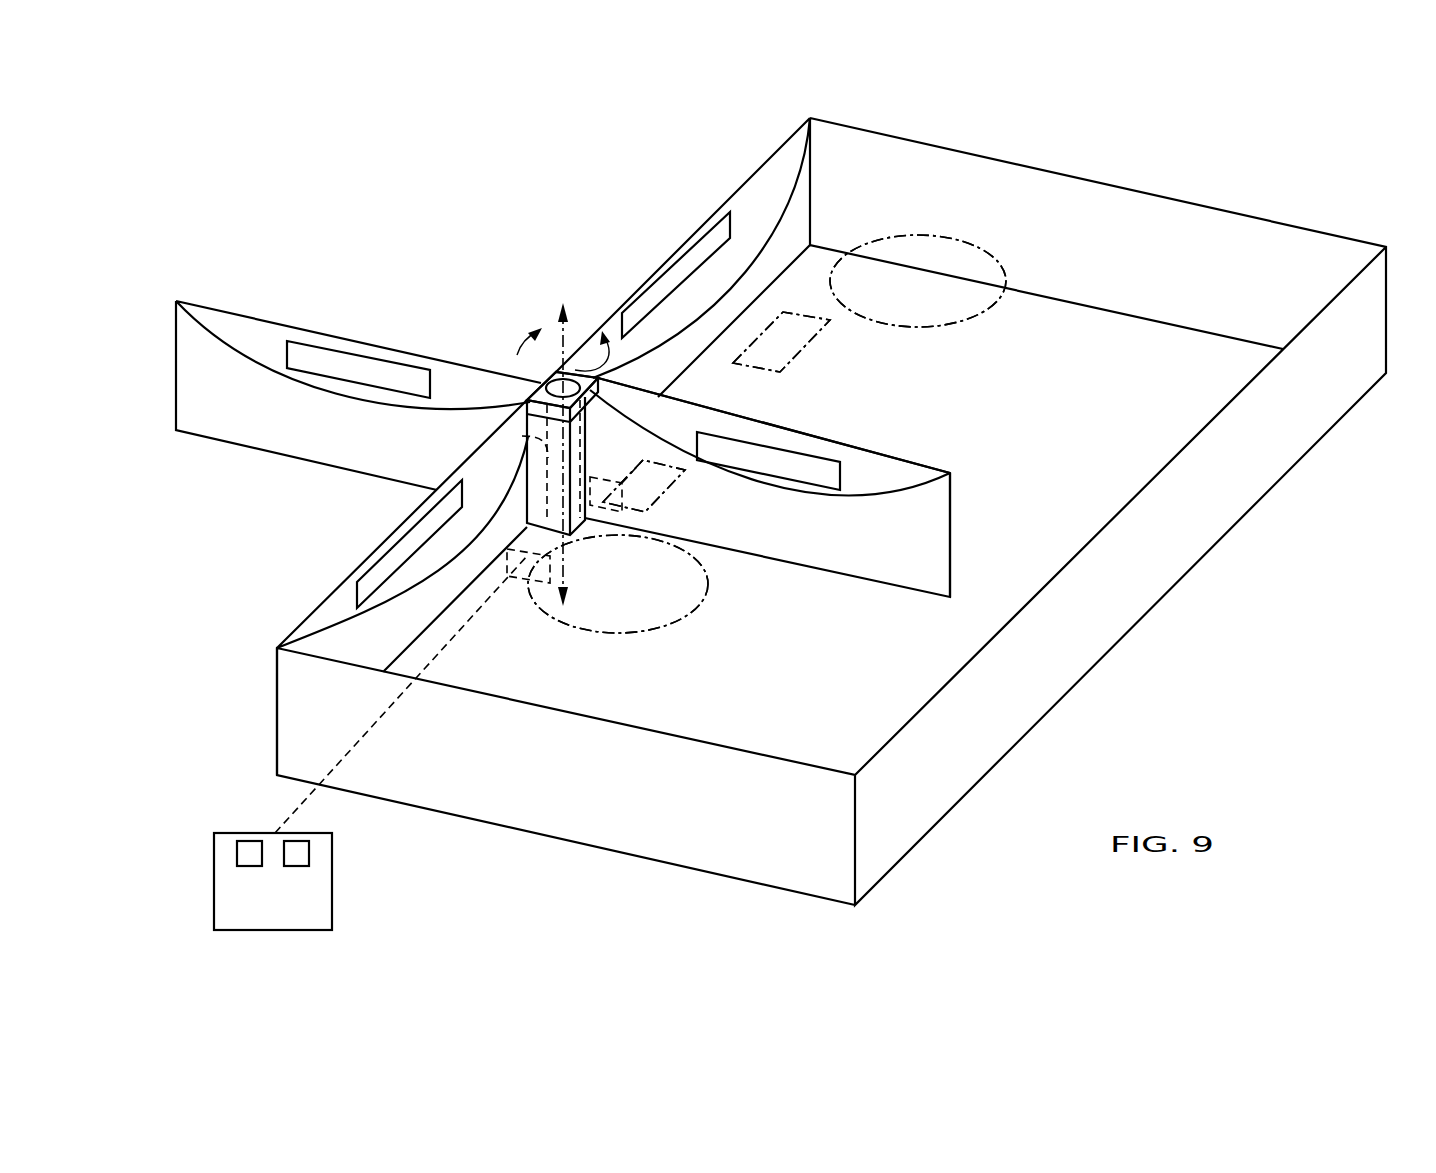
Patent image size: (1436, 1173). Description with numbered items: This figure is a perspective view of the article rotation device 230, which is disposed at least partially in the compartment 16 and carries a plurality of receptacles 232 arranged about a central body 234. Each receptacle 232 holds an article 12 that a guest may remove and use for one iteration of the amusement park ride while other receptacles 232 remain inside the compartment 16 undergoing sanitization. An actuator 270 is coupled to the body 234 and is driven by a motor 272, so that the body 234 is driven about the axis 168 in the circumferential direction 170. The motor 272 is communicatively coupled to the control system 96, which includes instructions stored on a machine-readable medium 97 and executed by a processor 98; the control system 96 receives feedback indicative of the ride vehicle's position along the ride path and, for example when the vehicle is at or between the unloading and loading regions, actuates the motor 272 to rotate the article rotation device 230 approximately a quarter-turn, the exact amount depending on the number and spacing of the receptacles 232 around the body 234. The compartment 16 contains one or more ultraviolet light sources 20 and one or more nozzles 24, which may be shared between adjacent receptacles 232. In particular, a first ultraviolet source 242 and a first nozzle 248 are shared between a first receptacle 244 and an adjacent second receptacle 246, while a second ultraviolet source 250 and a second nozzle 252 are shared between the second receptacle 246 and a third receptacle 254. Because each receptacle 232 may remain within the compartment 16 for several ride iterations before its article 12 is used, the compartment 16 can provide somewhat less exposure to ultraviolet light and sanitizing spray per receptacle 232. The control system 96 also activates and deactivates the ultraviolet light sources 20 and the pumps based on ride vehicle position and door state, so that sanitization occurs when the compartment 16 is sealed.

The article 12 is at (323, 352).
The compartment 16 is at (1100, 181).
The ultraviolet light source 20 is at (1007, 280).
The nozzle 24 is at (787, 367).
The control system 96 is at (252, 833).
The machine-readable medium 97 is at (308, 853).
The processor 98 is at (238, 853).
The axis 168 is at (567, 348).
The circumferential direction 170 is at (545, 372).
The article rotation device 230 is at (528, 270).
The receptacle 232 is at (798, 197).
The body 234 is at (535, 385).
The first ultraviolet source 242 is at (973, 243).
The first receptacle 244 is at (680, 333).
The second receptacle 246 is at (938, 568).
The first nozzle 248 is at (817, 340).
The second ultraviolet source 250 is at (703, 603).
The second nozzle 252 is at (648, 510).
The third receptacle 254 is at (315, 630).
The actuator 270 is at (522, 436).
The motor 272 is at (507, 549).